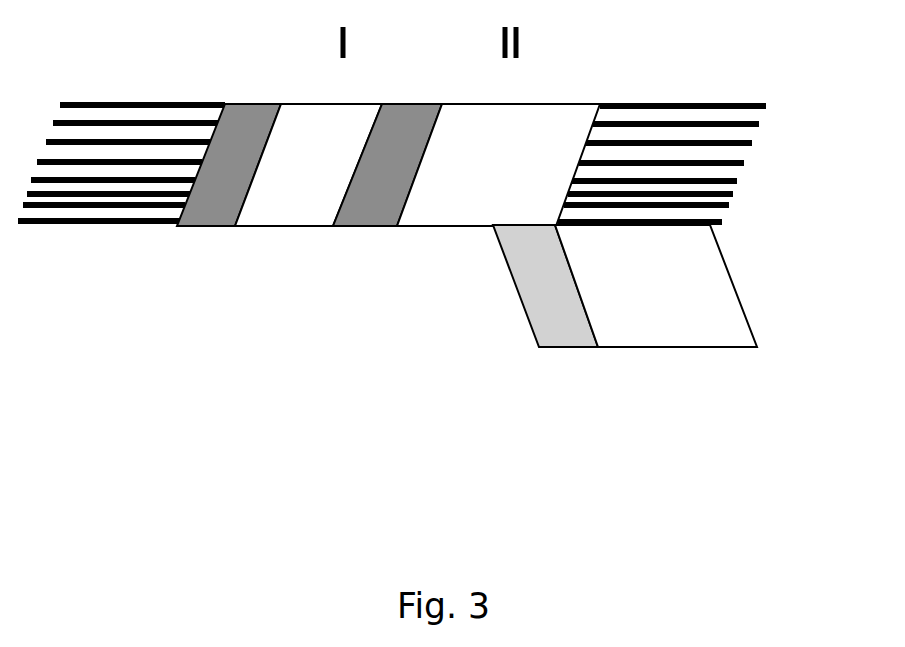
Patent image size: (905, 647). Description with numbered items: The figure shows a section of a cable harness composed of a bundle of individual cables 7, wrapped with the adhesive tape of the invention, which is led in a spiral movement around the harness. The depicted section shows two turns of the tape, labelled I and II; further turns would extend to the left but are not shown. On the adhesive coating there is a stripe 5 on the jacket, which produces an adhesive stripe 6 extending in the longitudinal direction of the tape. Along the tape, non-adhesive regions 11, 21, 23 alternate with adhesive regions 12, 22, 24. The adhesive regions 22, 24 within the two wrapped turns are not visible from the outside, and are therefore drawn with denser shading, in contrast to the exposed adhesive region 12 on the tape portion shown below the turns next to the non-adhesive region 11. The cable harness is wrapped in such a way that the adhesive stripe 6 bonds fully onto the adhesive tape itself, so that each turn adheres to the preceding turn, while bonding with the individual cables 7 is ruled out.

The individual cables 7 is at (722, 122).
The adhesive region 24 is at (229, 165).
The non-adhesive region 23 is at (308, 165).
The adhesive region 22 is at (387, 165).
The non-adhesive region 21 is at (498, 165).
The adhesive region 12 is at (545, 286).
The non-adhesive region 11 is at (656, 286).
The adhesive stripe 6 is at (585, 392).
The stripe 5 is at (710, 388).